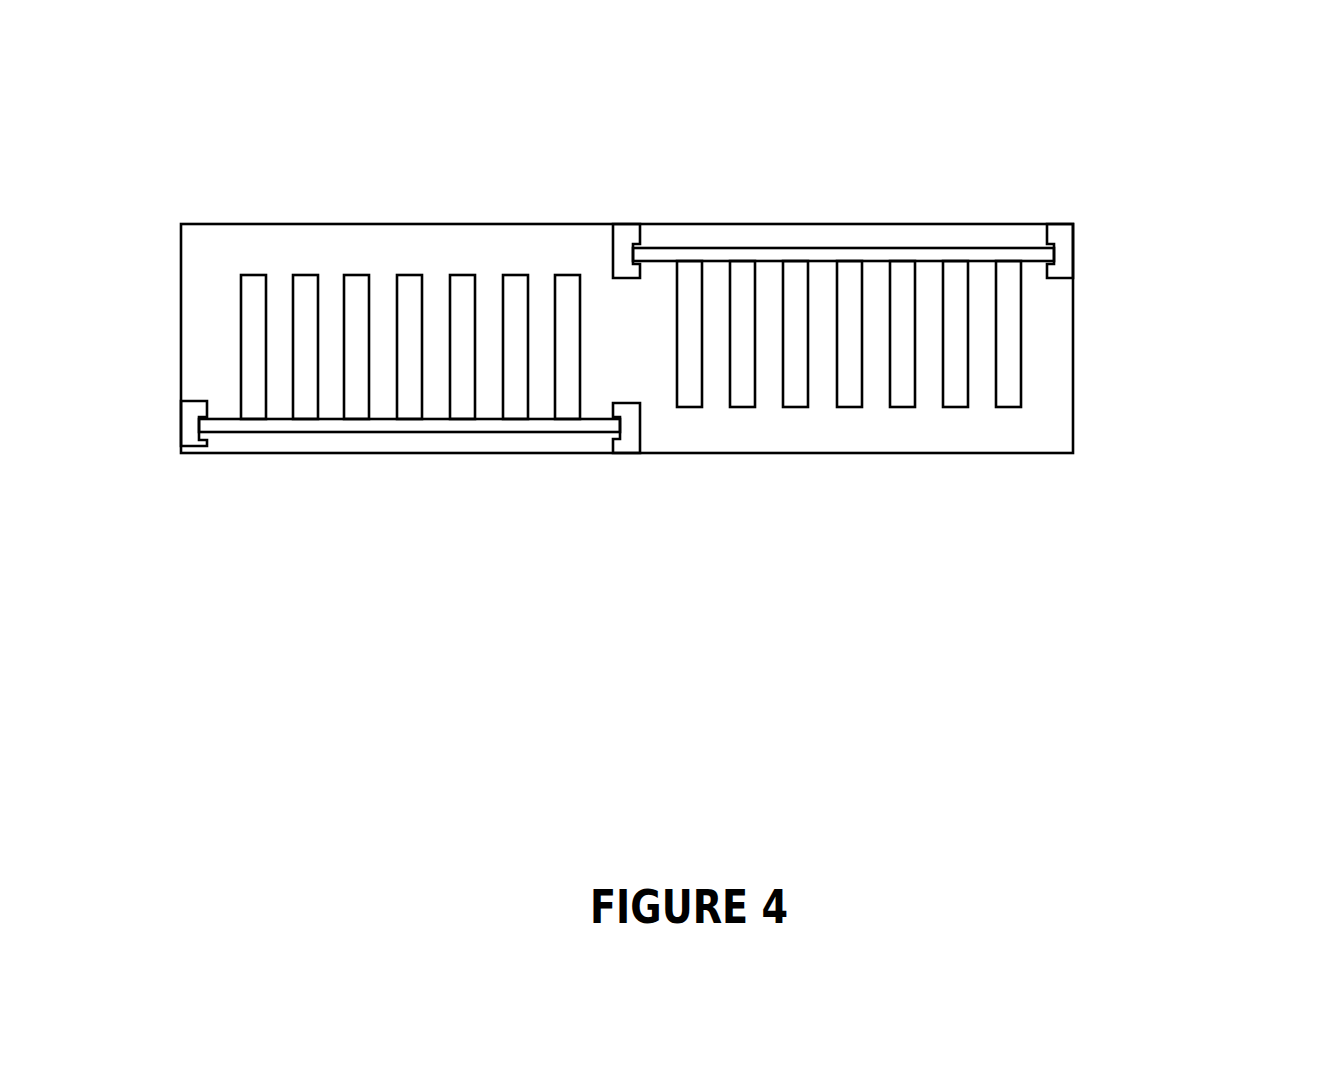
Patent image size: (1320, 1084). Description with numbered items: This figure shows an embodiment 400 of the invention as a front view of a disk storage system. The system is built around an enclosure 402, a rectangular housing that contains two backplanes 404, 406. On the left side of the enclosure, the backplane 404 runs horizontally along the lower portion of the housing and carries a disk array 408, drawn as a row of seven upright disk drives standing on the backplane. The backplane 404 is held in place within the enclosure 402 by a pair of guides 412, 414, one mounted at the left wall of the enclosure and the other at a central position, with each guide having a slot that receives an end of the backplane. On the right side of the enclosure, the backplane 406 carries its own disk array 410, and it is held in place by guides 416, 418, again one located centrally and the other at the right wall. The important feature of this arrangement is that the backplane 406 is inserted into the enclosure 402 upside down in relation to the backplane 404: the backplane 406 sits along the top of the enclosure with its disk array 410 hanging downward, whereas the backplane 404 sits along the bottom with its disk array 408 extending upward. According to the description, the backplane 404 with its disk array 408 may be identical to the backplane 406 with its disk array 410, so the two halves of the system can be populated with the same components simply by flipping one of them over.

The embodiment 400 is at (1065, 563).
The enclosure 402 is at (1158, 353).
The backplane 404 is at (365, 428).
The backplane 406 is at (795, 248).
The disk array 408 is at (450, 275).
The disk array 410 is at (740, 407).
The guide 412 is at (188, 412).
The guide 414 is at (630, 453).
The guide 416 is at (645, 224).
The guide 418 is at (1066, 248).